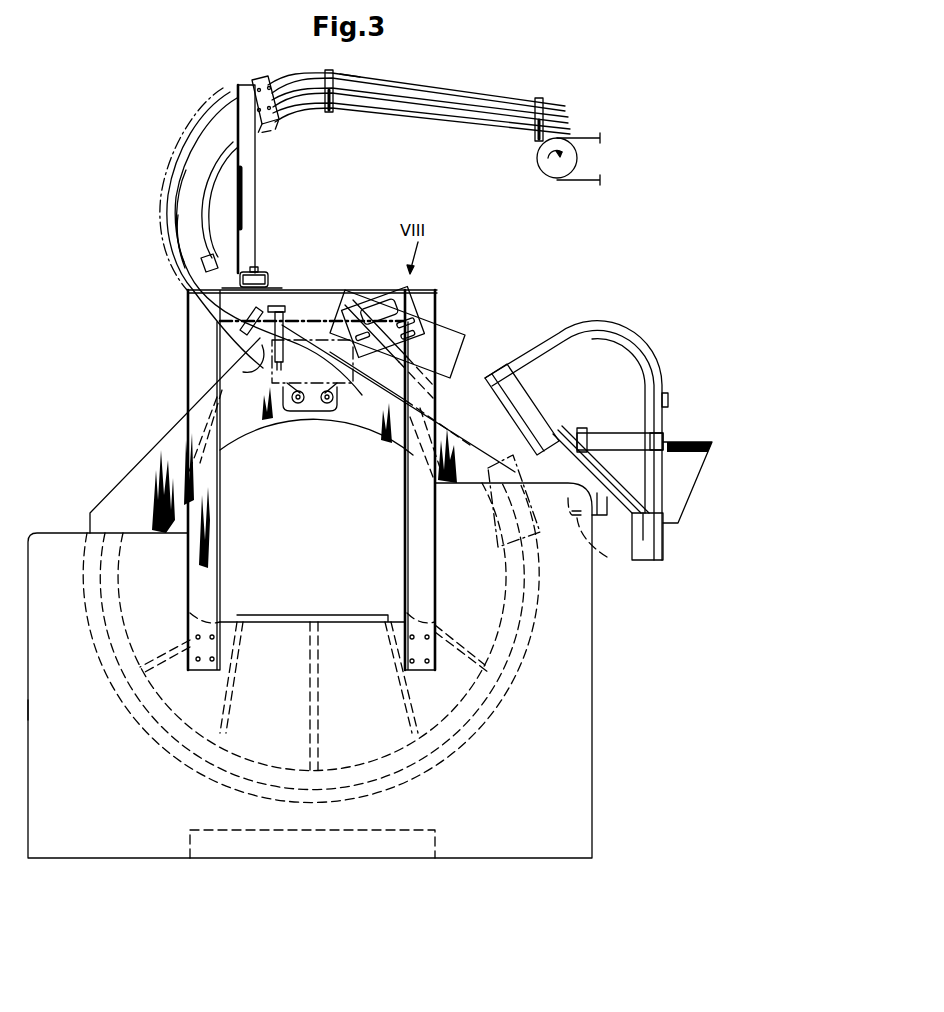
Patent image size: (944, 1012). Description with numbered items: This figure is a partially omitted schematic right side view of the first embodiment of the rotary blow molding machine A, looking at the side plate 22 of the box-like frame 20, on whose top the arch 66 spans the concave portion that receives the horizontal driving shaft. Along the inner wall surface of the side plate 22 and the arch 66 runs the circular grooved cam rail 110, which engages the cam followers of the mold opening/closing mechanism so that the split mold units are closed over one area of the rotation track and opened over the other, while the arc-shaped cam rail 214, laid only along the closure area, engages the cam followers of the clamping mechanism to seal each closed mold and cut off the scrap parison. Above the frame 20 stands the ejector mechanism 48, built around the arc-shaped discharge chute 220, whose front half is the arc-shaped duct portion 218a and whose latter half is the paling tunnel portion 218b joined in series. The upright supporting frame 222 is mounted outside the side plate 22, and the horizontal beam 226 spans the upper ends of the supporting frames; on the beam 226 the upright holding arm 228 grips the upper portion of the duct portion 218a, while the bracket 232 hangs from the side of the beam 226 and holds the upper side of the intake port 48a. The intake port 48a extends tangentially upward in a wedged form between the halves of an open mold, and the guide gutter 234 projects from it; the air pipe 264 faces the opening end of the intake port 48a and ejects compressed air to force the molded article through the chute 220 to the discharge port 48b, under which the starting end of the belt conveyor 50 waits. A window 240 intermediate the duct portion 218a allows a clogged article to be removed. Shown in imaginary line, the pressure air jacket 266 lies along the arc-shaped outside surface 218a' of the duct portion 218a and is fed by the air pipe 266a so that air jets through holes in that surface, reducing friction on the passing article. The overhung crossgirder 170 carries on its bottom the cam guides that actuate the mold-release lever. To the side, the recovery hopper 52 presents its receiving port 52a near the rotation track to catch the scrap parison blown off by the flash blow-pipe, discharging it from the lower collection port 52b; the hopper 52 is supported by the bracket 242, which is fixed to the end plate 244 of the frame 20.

The box-like frame 20 is at (570, 692).
The side plate 22 is at (570, 726).
The supporting frame 222 is at (192, 388).
The arch 66 is at (160, 460).
The cam rail 214 is at (180, 752).
The grooved cam rail 110 is at (103, 598).
The discharge chute 220 is at (192, 165).
The duct portion 218a is at (143, 219).
The arc-shaped outside surface 218a' is at (142, 238).
The pressure air jacket 266 is at (165, 184).
The air pipe 266a is at (250, 373).
The window 240 is at (208, 183).
The holding arm 228 is at (248, 164).
The horizontal beam 226 is at (268, 272).
The ejector mechanism 48 is at (185, 113).
The paling tunnel portion 218b is at (432, 88).
The discharge port 48b is at (563, 126).
The intake port 48a is at (337, 292).
The bracket 232 is at (300, 302).
The guide gutter 234 is at (337, 387).
The air pipe 264 is at (360, 385).
The belt conveyor 50 is at (583, 182).
The overhung crossgirder 170 is at (412, 308).
The recovery hopper 52 is at (617, 342).
The receiving port 52a is at (508, 412).
The lower collection port 52b is at (648, 562).
The bracket 242 is at (602, 510).
The end plate 244 is at (584, 546).
The rotary blow molding machine A is at (150, 300).